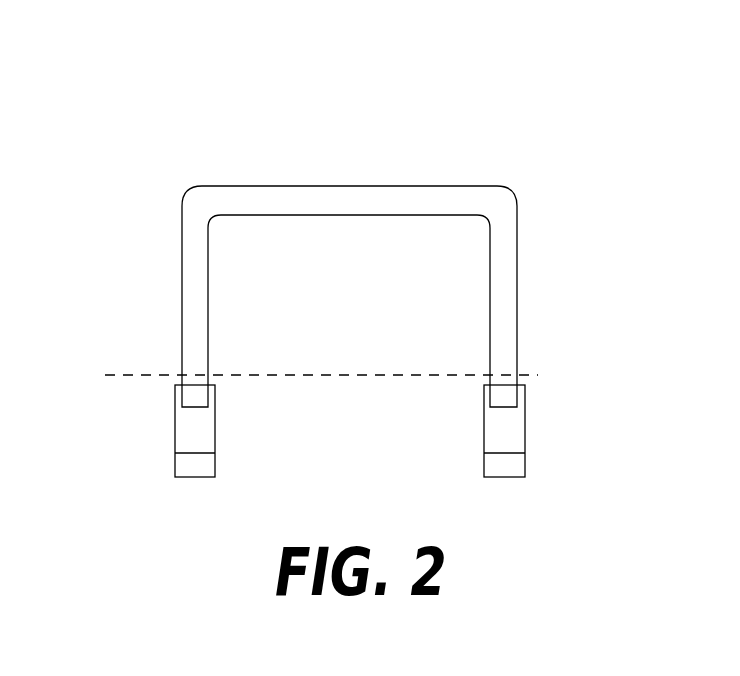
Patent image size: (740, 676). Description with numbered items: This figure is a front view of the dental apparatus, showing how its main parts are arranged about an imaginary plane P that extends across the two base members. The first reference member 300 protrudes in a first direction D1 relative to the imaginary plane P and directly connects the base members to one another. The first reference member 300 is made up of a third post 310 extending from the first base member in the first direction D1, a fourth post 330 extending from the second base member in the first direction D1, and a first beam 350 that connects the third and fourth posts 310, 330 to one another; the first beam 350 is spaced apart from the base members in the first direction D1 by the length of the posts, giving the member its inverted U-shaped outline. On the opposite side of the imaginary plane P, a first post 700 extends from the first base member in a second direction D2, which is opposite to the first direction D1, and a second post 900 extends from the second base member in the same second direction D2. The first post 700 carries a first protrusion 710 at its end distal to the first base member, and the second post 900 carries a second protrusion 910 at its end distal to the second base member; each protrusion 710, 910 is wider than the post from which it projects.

The first reference member 300 is at (321, 227).
The first beam 350 is at (338, 185).
The fourth post 330 is at (182, 275).
The third post 310 is at (490, 283).
The second post 900 is at (215, 412).
The second protrusion 910 is at (207, 468).
The first post 700 is at (485, 428).
The first protrusion 710 is at (493, 467).
The imaginary plane P is at (287, 374).
The first direction D1 is at (117, 308).
The second direction D2 is at (117, 443).